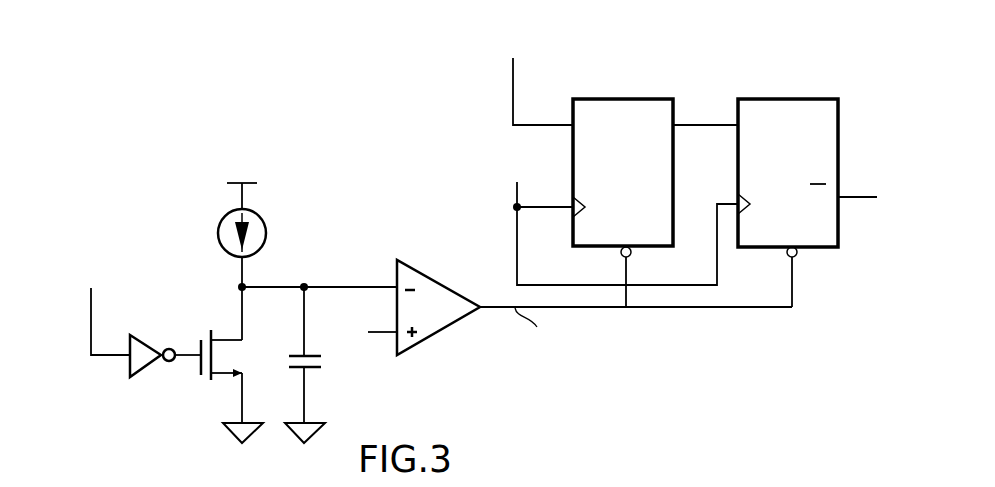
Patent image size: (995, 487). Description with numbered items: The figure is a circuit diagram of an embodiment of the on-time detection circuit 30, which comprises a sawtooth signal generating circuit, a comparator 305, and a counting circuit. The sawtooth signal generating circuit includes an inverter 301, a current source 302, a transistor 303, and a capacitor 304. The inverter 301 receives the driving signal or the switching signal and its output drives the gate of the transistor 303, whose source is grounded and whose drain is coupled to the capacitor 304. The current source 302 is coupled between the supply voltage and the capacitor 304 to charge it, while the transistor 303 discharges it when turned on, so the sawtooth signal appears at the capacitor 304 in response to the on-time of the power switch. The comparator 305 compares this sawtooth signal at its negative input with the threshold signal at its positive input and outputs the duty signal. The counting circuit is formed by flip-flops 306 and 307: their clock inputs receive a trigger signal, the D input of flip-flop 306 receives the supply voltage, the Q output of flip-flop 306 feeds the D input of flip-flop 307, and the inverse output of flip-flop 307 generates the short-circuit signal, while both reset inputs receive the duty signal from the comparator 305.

The on-time detection circuit 30 is at (863, 27).
The inverter 301 is at (157, 349).
The current source 302 is at (217, 230).
The transistor 303 is at (210, 338).
The capacitor 304 is at (303, 347).
The comparator 305 is at (398, 258).
The flip-flop 306 is at (613, 98).
The flip-flop 307 is at (792, 97).